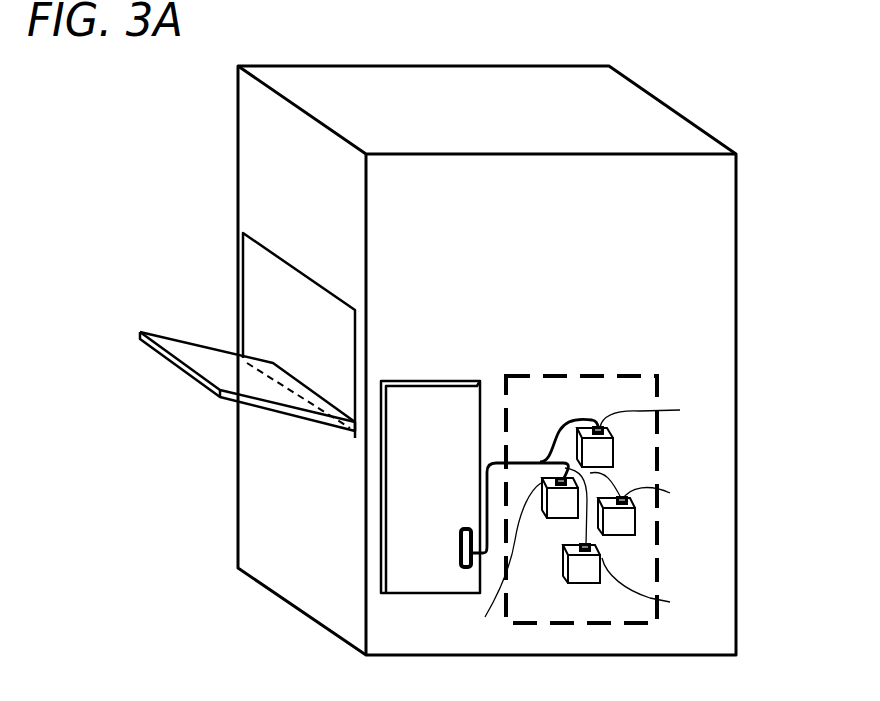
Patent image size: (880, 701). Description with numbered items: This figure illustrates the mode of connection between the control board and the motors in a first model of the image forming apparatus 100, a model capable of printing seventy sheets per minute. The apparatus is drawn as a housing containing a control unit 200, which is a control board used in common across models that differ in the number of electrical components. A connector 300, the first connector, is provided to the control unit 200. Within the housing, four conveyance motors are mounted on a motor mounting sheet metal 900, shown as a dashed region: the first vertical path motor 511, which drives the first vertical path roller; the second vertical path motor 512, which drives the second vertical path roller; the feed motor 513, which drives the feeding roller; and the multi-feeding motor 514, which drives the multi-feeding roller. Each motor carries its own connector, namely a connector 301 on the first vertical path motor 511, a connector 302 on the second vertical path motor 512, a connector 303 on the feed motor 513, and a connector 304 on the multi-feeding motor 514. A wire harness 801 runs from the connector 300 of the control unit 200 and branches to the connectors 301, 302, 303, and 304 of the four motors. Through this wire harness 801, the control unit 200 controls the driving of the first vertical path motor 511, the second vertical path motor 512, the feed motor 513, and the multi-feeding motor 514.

The image forming apparatus 100 is at (717, 119).
The control unit 200 is at (416, 595).
The connector 300 is at (460, 547).
The connector 301 is at (657, 408).
The connector 302 is at (495, 558).
The connector 303 is at (670, 493).
The connector 304 is at (670, 602).
The first vertical path motor 511 is at (628, 438).
The second vertical path motor 512 is at (549, 520).
The feed motor 513 is at (631, 537).
The multi-feeding motor 514 is at (586, 585).
The wire harness 801 is at (487, 482).
The motor mounting sheet metal 900 is at (570, 375).